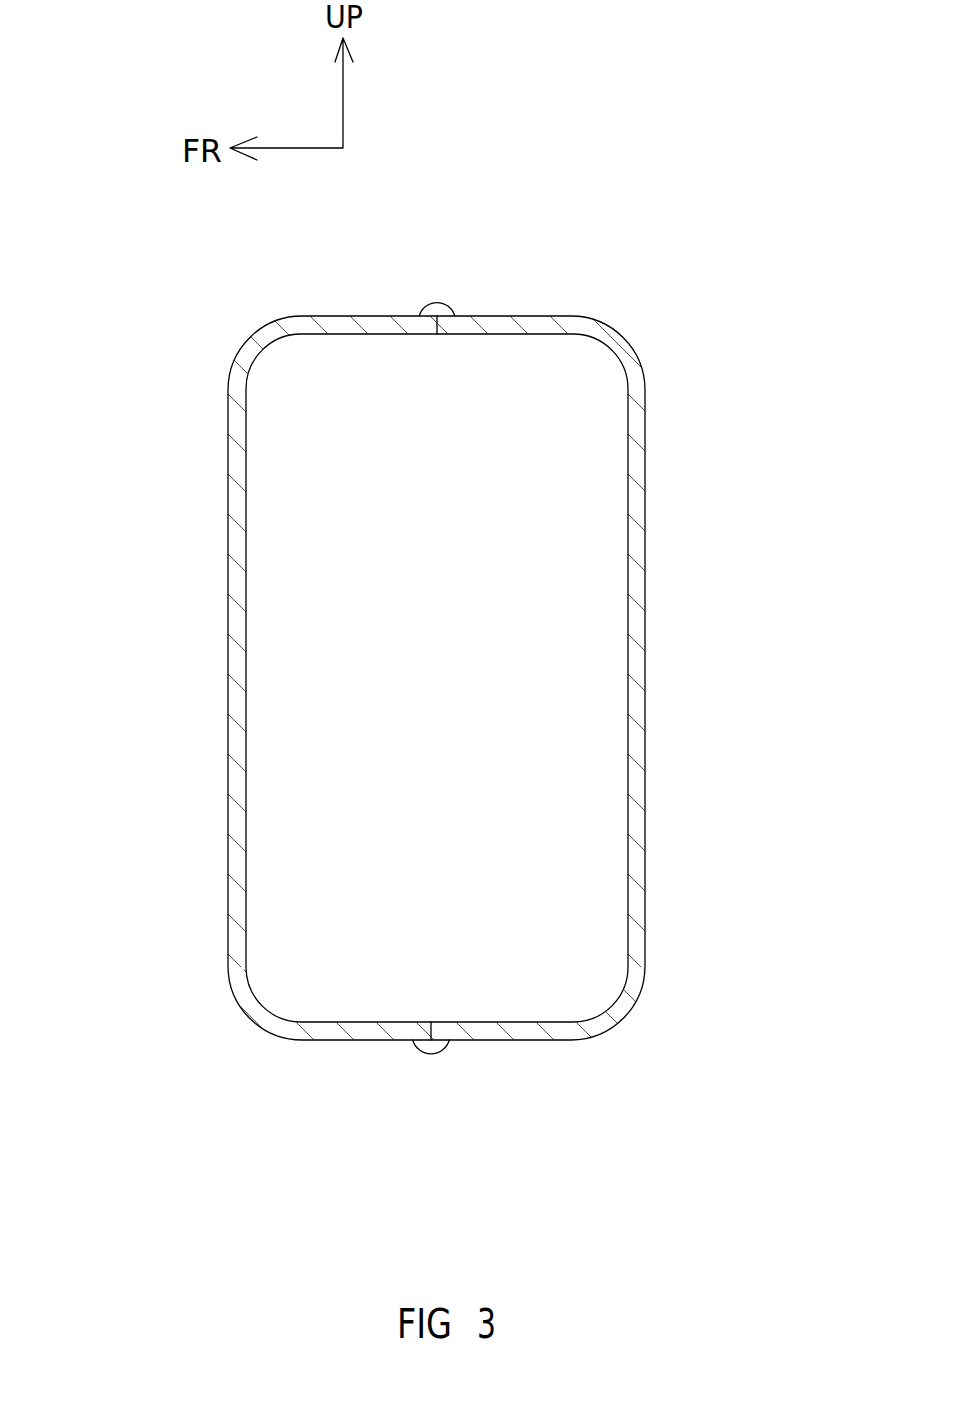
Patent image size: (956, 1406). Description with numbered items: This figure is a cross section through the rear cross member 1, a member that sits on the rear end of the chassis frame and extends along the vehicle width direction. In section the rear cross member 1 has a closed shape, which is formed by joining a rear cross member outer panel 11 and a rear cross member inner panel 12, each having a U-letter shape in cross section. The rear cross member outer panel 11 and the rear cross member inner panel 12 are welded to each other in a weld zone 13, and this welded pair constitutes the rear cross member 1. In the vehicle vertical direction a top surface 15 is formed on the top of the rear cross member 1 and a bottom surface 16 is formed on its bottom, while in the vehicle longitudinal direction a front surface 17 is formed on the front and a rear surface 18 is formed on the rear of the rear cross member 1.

The rear cross member 1 is at (437, 681).
The rear cross member outer panel 11 is at (288, 320).
The rear cross member inner panel 12 is at (618, 342).
The weld zone 13 is at (446, 303).
The top surface 15 is at (375, 316).
The bottom surface 16 is at (332, 1041).
The front surface 17 is at (226, 643).
The rear surface 18 is at (647, 622).